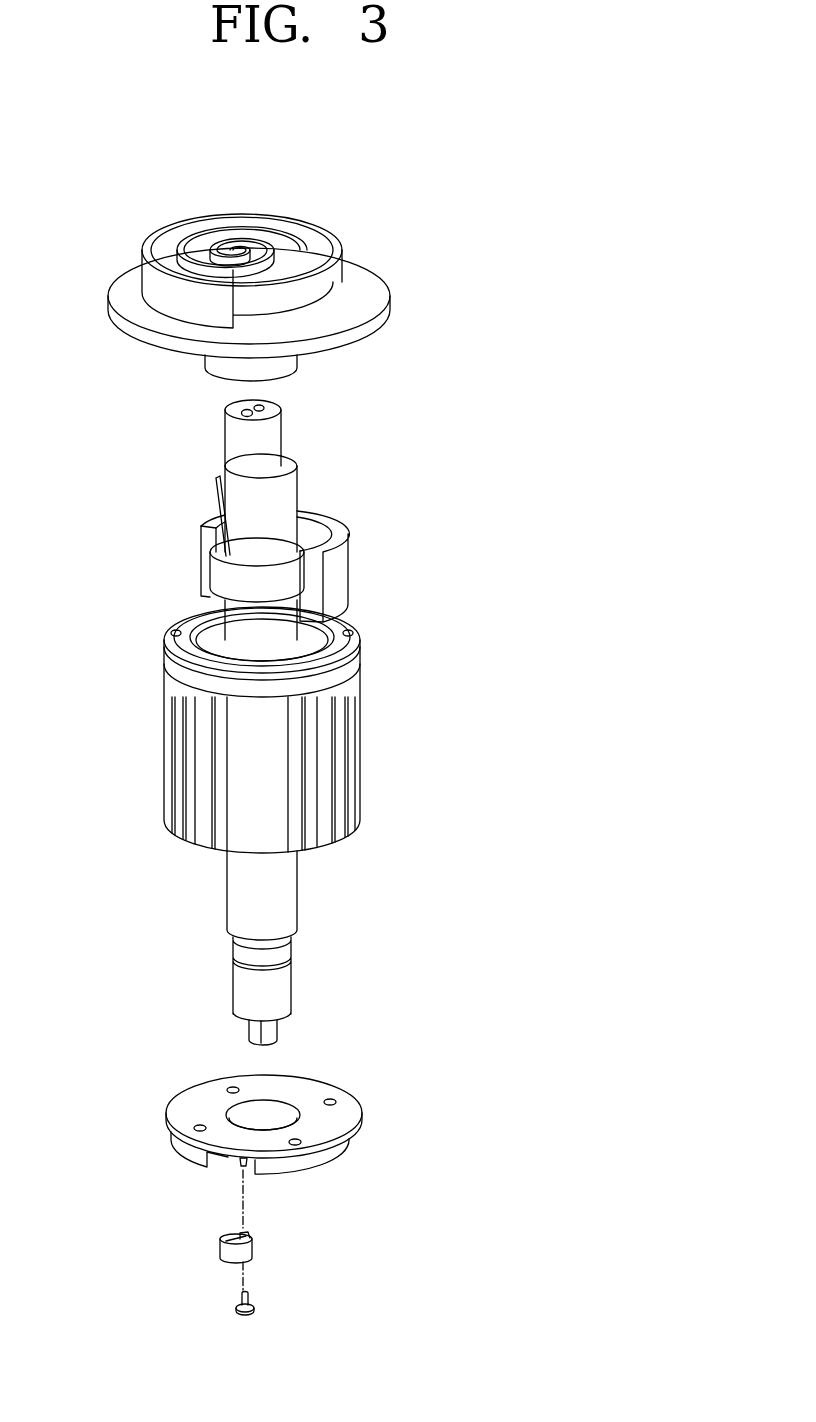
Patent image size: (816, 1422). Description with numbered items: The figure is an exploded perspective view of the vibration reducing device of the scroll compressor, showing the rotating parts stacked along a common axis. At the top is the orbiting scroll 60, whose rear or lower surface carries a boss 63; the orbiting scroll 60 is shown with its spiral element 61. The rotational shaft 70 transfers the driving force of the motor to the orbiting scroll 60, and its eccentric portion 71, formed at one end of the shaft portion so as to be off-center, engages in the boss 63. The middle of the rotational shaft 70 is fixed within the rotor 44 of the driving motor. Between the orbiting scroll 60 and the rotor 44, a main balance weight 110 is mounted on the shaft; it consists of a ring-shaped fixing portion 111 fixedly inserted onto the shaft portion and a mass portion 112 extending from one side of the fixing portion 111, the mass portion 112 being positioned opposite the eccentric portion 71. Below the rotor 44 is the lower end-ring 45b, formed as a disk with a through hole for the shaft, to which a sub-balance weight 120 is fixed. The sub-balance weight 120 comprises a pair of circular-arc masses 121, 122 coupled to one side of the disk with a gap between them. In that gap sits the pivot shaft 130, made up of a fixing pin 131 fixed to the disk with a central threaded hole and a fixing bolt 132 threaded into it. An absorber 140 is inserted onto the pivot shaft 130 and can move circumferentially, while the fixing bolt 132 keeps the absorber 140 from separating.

The orbiting scroll 60 is at (382, 246).
The spiral spring 61 is at (150, 273).
The boss 63 is at (280, 363).
The eccentric portion 71 is at (230, 434).
The rotational shaft 70 is at (220, 911).
The main balance weight 110 is at (306, 570).
The ring-shaped fixing portion 111 is at (212, 571).
The mass portion 112 is at (342, 591).
The rotor 44 is at (369, 734).
The sub-balance weight 120 is at (288, 1137).
The lower end-ring 45b is at (182, 1105).
The mass 121 is at (172, 1145).
The mass 122 is at (330, 1165).
The pivot shaft 130 is at (148, 1236).
The fixing pin 131 is at (240, 1166).
The fixing bolt 132 is at (237, 1306).
The absorber 140 is at (269, 1252).